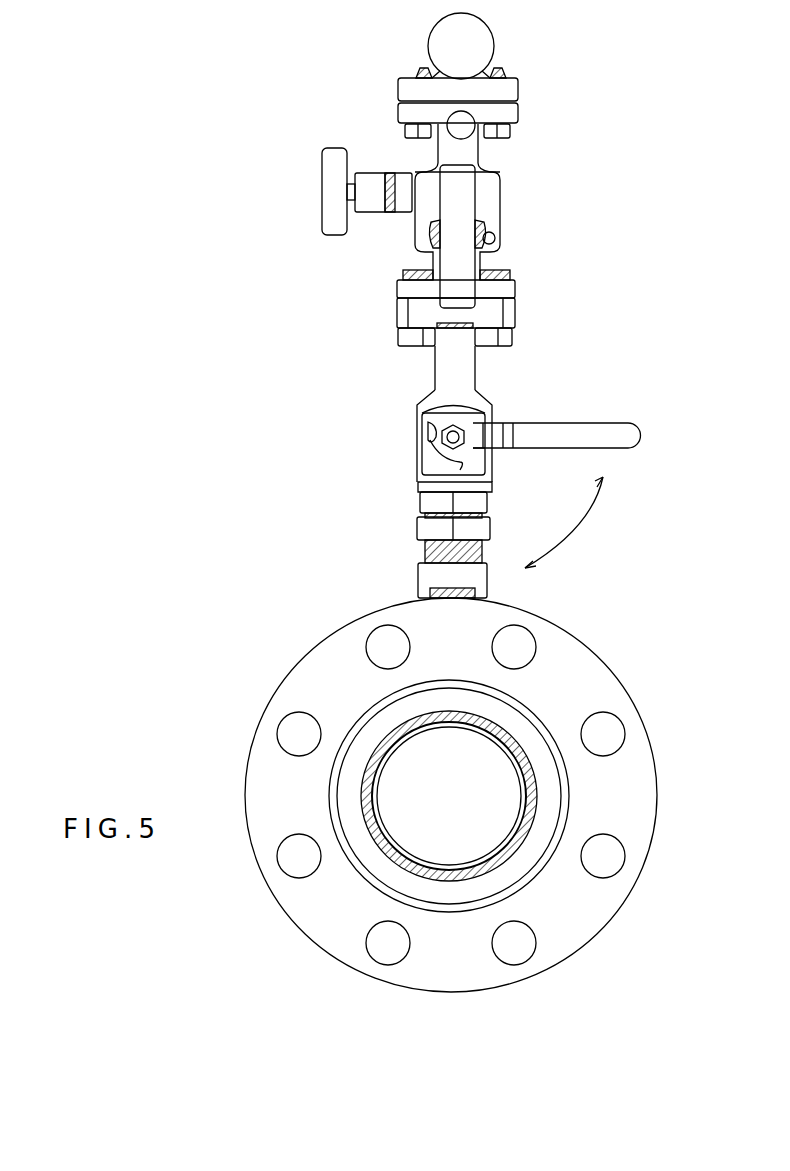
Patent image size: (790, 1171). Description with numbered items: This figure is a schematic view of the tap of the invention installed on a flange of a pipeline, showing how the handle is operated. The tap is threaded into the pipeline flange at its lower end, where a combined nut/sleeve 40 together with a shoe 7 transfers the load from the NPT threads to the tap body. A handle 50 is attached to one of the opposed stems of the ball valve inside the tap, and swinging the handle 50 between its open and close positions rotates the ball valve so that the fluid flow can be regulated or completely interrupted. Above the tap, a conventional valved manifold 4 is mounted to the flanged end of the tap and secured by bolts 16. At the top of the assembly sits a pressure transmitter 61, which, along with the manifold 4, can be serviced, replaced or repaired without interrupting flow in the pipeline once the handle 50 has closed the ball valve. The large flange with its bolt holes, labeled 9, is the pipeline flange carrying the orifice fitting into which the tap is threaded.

The pressure transmitter 61 is at (495, 36).
The manifold 4 is at (500, 212).
The bolts 16 is at (398, 340).
The combined nut/sleeve 40 is at (417, 530).
The handle 50 is at (570, 423).
The shoe 7 is at (418, 580).
The pipe flange 9 is at (575, 640).